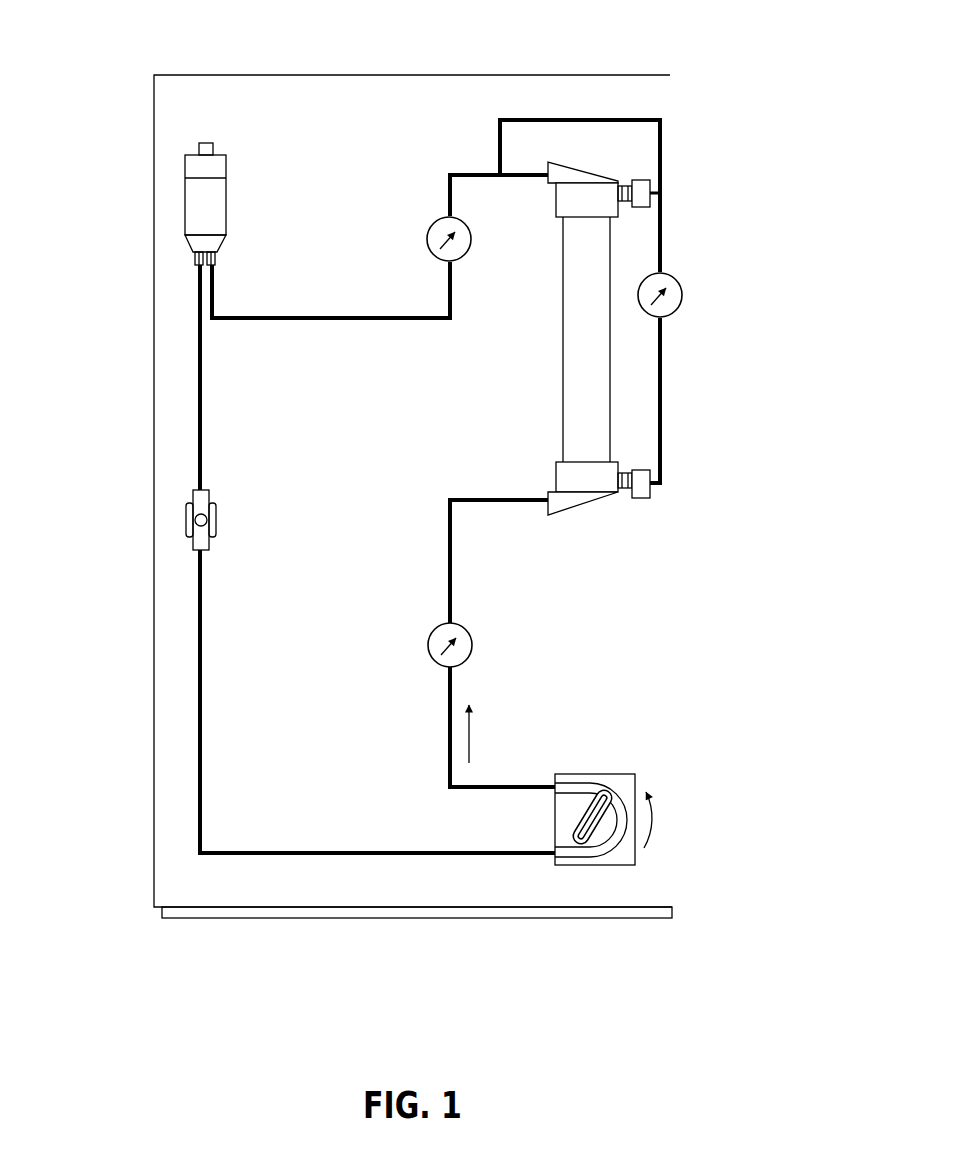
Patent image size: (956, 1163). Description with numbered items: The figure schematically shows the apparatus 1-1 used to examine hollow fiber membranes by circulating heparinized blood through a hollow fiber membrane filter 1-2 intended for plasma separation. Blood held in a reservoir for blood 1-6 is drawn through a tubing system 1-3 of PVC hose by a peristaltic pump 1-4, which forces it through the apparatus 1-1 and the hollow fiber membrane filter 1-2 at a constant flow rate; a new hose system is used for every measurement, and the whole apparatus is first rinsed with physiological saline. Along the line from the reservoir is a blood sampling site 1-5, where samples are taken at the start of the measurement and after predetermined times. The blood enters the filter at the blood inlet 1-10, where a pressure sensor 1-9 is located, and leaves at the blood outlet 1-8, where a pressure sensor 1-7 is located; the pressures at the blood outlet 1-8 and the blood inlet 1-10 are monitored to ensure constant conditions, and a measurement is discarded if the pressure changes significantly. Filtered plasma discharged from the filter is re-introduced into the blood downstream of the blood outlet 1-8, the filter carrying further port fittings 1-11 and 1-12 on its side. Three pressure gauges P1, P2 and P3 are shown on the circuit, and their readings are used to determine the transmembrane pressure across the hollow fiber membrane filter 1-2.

The apparatus 1-1 is at (632, 301).
The hollow fiber membrane filter 1-2 is at (619, 375).
The tubing system 1-3 is at (330, 857).
The peristaltic pump 1-4 is at (602, 868).
The blood sampling site 1-5 is at (189, 514).
The reservoir for blood 1-6 is at (182, 207).
The pressure sensor 1-7 is at (380, 166).
The blood outlet 1-8 is at (545, 161).
The pressure sensor 1-9 is at (513, 643).
The blood inlet 1-10 is at (537, 524).
The upper port fitting 1-11 is at (669, 189).
The lower port fitting 1-12 is at (679, 467).
The pressure gauge P1 is at (437, 624).
The pressure gauge P2 is at (436, 220).
The pressure gauge P3 is at (675, 293).